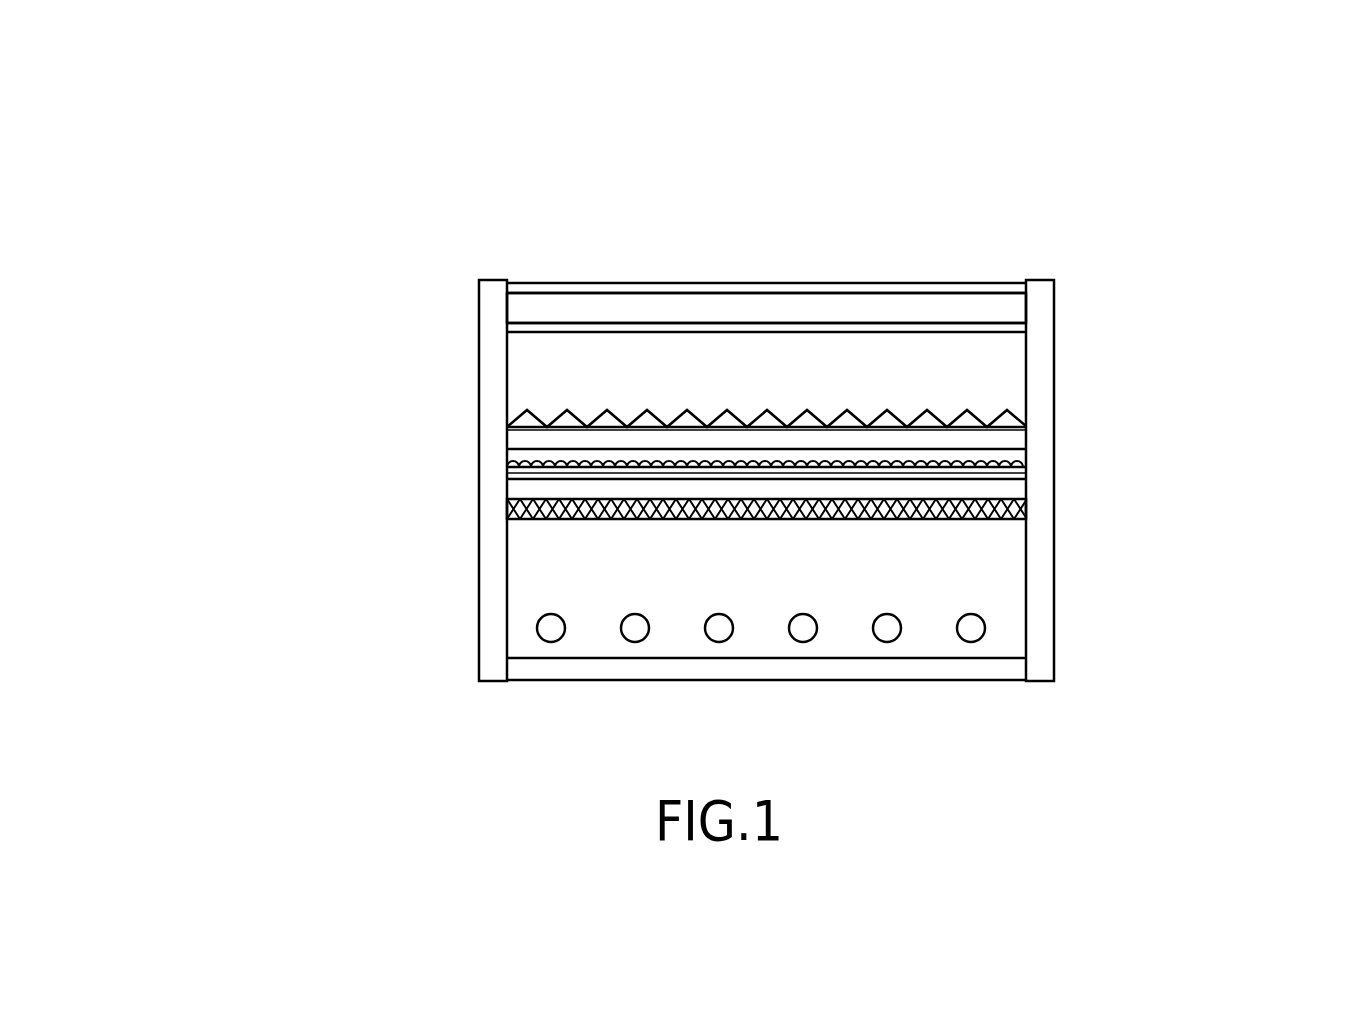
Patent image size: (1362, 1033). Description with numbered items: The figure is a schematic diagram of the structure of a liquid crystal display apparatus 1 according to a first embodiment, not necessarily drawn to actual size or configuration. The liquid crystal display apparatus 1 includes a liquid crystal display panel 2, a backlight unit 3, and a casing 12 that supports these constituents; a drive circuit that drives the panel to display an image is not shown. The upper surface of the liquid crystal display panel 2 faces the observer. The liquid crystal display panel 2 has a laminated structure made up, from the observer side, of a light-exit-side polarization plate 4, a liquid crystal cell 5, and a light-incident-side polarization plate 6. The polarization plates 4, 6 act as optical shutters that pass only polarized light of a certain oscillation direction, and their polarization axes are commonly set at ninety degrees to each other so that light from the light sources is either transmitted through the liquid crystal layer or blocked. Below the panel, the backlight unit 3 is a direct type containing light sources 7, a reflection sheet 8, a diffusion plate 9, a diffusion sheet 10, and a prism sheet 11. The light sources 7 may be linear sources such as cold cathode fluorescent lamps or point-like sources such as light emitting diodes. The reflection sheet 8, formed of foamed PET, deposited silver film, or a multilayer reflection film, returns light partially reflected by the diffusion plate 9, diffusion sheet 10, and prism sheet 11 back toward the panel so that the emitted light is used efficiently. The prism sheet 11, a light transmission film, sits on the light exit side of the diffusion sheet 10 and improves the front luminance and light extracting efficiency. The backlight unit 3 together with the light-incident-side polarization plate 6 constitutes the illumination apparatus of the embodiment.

The liquid crystal display apparatus 1 is at (498, 118).
The liquid crystal display panel 2 is at (587, 317).
The backlight unit 3 is at (781, 581).
The light-exit-side polarization plate 4 is at (988, 283).
The liquid crystal cell 5 is at (1012, 305).
The light-incident-side polarization plate 6 is at (987, 333).
The light sources 7 is at (980, 615).
The reflection sheet 8 is at (885, 682).
The diffusion plate 9 is at (1025, 512).
The diffusion sheet 10 is at (1017, 470).
The prism sheet 11 is at (1015, 439).
The casing 12 is at (1047, 657).